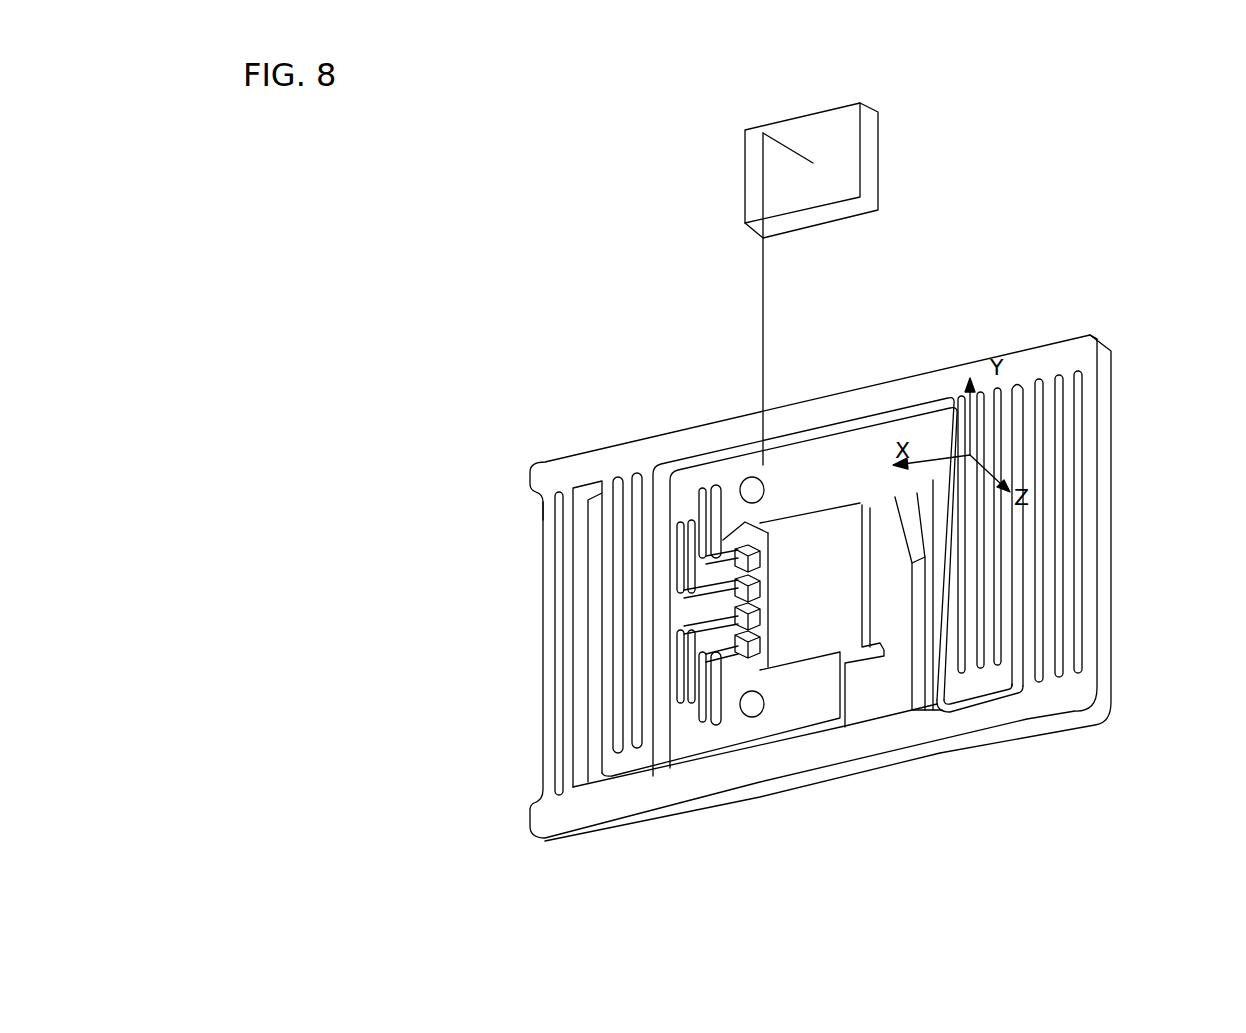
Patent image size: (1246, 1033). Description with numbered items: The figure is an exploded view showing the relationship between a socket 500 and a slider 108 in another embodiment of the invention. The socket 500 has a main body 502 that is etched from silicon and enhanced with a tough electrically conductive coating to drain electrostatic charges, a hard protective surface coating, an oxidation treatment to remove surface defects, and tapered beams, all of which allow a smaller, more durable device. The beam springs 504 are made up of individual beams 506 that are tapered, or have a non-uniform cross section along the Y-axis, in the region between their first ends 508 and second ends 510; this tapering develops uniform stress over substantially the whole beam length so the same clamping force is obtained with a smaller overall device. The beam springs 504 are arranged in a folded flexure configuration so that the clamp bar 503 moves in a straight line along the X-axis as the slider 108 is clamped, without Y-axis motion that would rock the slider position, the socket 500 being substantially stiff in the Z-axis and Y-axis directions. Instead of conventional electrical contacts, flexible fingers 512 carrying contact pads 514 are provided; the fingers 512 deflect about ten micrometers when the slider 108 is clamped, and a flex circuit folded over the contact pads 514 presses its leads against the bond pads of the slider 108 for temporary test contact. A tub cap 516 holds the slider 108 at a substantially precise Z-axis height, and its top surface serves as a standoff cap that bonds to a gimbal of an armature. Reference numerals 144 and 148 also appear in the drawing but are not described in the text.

The slider 108 is at (868, 122).
The mounting surface 144 is at (784, 558).
The mounting holes 148 is at (745, 477).
The socket 500 is at (606, 297).
The main body 502 is at (668, 438).
The clamp bar 503 is at (888, 523).
The beam springs 504 is at (552, 653).
The individual beams 506 is at (570, 613).
The first ends 508 is at (540, 480).
The second ends 510 is at (582, 797).
The flexible fingers 512 is at (713, 622).
The contact pads 514 is at (757, 553).
The tub cap 516 is at (849, 610).